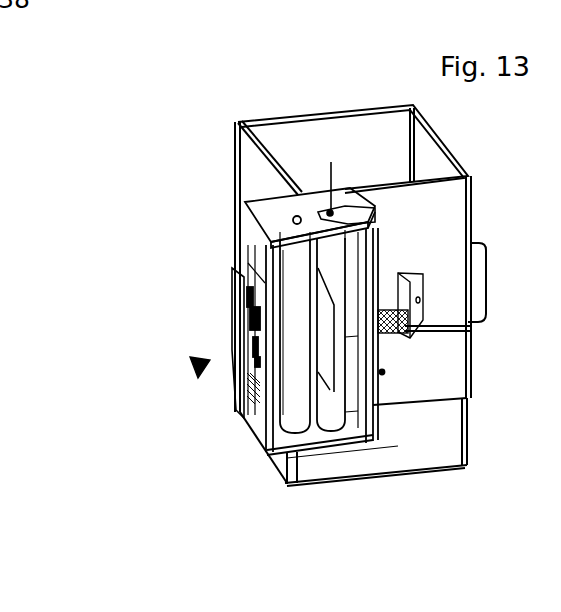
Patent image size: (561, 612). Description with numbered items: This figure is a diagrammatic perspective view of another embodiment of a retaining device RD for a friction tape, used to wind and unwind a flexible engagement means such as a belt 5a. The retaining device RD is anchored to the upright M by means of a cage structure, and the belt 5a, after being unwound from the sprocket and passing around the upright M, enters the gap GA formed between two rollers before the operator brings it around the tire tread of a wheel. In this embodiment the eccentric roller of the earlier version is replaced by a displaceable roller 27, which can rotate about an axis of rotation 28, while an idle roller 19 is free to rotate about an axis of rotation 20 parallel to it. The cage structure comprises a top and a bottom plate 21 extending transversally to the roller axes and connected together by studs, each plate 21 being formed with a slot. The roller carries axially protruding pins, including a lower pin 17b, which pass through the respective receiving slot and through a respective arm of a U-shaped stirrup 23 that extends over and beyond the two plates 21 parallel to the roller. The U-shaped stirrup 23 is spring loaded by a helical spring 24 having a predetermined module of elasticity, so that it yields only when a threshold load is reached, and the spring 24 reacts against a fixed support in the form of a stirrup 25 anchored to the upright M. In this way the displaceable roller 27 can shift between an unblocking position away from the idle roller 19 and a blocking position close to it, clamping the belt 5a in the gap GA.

The upright M is at (233, 153).
The axis of rotation 28 is at (228, 180).
The axis of rotation 20 is at (292, 221).
The U-shaped stirrup 23 is at (340, 212).
The displaceable roller 27 is at (330, 257).
The idle roller 19 is at (300, 337).
The stirrup 25 is at (417, 283).
The helical spring 24 is at (397, 333).
The plate 21 is at (265, 422).
The lower pin 17b is at (348, 443).
The gap GA is at (310, 405).
The belt 5a is at (318, 360).
The retaining device RD is at (190, 366).